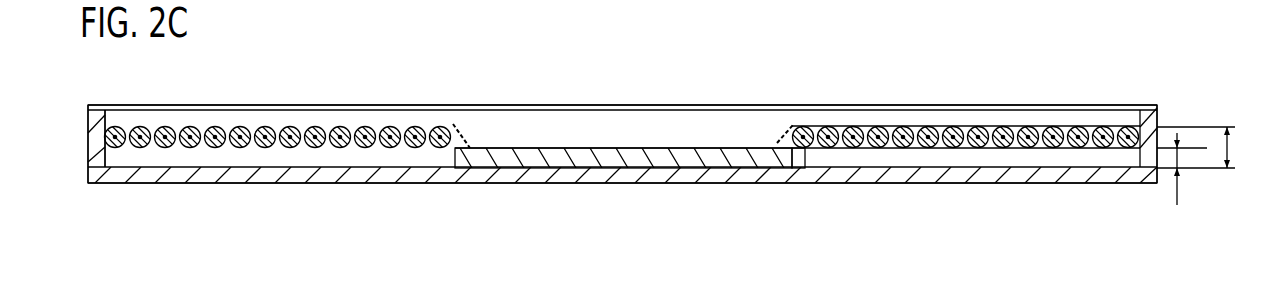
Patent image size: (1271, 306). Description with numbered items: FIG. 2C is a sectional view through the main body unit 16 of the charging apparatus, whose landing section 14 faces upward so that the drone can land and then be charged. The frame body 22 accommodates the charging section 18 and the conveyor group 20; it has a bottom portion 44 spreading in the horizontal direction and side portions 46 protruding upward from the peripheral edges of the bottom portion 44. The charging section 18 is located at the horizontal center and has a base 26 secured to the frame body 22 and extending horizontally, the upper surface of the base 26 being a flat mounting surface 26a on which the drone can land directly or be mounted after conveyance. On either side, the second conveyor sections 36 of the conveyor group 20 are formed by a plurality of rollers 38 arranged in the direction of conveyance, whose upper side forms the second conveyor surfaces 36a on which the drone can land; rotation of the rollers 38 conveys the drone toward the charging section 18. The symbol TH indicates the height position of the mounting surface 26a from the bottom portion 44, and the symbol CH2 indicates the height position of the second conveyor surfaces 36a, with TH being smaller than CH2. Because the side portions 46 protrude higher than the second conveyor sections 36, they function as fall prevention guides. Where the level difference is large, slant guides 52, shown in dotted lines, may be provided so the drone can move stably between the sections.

The main body unit 16 is at (454, 70).
The frame body 22 is at (163, 105).
The landing section 14 is at (262, 126).
The side portions 46 is at (100, 140).
The second conveyor sections 36 is at (623, 140).
The conveyor group 20 is at (623, 140).
The second conveyor surfaces 36a is at (903, 127).
The slant guides 52 is at (470, 137).
The base 26 is at (540, 157).
The charging section 18 is at (623, 190).
The mounting surface 26a is at (612, 147).
The bottom portion 44 is at (663, 173).
The rollers 38 is at (803, 157).
The height position of the mounting surface TH is at (1189, 169).
The height position of the second conveyor surfaces CH2 is at (1244, 147).